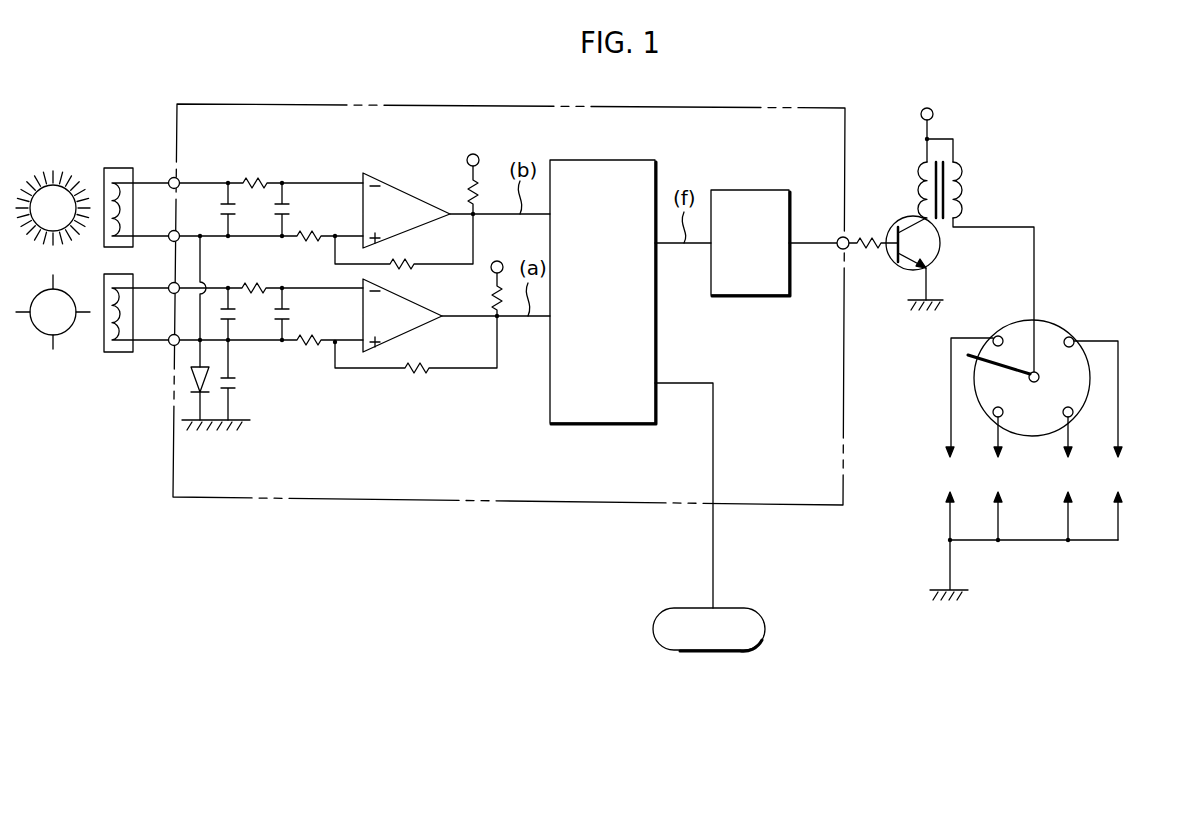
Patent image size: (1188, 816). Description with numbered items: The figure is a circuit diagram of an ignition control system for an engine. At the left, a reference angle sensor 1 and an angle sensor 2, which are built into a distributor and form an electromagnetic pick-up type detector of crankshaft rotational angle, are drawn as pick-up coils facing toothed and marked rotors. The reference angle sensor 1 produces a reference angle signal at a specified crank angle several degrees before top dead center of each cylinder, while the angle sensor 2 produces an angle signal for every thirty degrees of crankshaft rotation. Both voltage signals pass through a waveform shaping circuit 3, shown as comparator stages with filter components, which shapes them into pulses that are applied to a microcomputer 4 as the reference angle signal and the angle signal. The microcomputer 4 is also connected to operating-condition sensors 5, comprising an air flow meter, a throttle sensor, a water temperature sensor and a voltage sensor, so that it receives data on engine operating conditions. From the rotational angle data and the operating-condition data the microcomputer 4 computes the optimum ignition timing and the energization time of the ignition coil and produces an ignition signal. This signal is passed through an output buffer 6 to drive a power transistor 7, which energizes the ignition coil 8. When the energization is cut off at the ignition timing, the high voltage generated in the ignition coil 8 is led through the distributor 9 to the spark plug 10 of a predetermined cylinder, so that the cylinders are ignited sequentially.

The reference angle sensor 1 is at (62, 350).
The angle sensor 2 is at (68, 178).
The waveform shaping circuit 3 is at (409, 193).
The microcomputer 4 is at (631, 160).
The operating-condition sensors 5 is at (715, 651).
The output buffer 6 is at (787, 190).
The power transistor 7 is at (897, 270).
The ignition coil 8 is at (962, 187).
The distributor 9 is at (1063, 327).
The spark plug 10 is at (1118, 477).